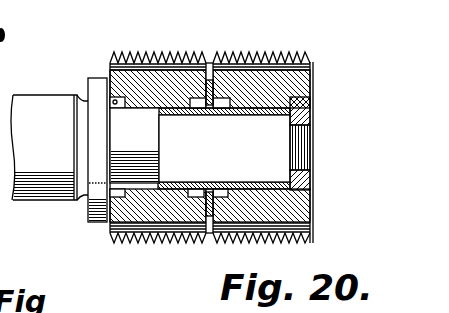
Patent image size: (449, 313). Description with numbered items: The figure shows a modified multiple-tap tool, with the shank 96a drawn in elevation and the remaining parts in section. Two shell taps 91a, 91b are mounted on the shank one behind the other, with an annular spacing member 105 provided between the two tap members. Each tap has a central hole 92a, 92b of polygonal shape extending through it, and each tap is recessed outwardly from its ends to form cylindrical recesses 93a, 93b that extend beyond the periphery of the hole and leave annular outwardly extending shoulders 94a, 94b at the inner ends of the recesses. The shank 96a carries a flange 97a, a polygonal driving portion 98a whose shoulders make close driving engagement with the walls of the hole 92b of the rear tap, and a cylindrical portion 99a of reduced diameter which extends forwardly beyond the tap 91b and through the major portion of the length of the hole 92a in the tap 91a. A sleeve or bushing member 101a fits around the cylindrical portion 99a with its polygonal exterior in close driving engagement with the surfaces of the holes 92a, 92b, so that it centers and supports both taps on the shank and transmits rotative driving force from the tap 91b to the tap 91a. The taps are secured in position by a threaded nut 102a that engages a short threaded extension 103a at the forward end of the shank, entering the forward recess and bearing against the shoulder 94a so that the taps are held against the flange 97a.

The shell tap 91a is at (262, 62).
The shell tap 91b is at (149, 50).
The central hole 92a is at (265, 105).
The central hole 92b is at (173, 108).
The cylindrical recess 93a is at (312, 100).
The cylindrical recess 93b is at (125, 64).
The annular shoulder 94a is at (312, 208).
The annular shoulder 94b is at (172, 192).
The shank 96a is at (23, 110).
The flange 97a is at (95, 78).
The driving portion 98a is at (140, 172).
The cylindrical portion 99a is at (224, 148).
The sleeve or bushing member 101a is at (178, 114).
The threaded nut 102a is at (313, 108).
The threaded extension 103a is at (313, 137).
The annular spacing member 105 is at (215, 75).